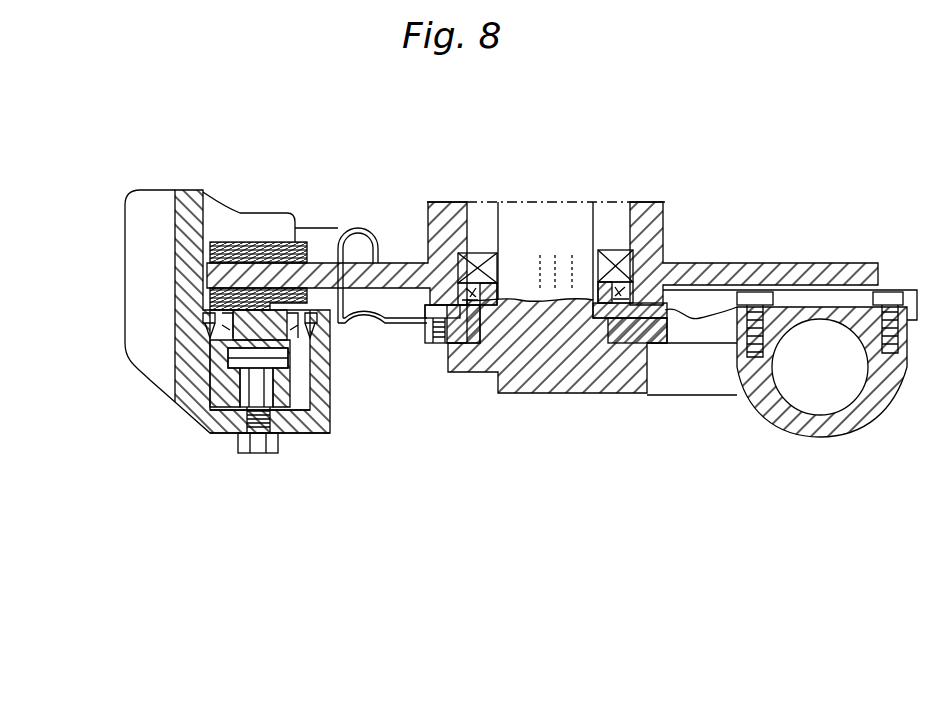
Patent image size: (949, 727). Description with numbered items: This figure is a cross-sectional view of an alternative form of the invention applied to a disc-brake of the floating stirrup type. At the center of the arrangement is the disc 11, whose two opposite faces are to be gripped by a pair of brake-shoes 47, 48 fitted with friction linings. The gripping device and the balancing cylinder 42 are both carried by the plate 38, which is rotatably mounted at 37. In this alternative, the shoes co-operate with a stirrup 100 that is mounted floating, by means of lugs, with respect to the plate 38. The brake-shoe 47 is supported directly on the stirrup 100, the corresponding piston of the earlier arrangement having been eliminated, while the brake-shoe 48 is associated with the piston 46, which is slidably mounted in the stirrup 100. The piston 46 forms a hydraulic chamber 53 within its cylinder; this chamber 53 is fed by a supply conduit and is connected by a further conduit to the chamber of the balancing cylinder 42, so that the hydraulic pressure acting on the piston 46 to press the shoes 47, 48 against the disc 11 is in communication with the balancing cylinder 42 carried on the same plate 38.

The stirrup 100 is at (210, 195).
The brake-shoe 47 is at (207, 260).
The disc 11 is at (207, 277).
The brake-shoe 48 is at (207, 297).
The piston 46 is at (210, 367).
The hydraulic chamber 53 is at (222, 418).
The plate 38 is at (405, 325).
The rotatable mounting 37 is at (463, 345).
The balancing cylinder 42 is at (877, 407).